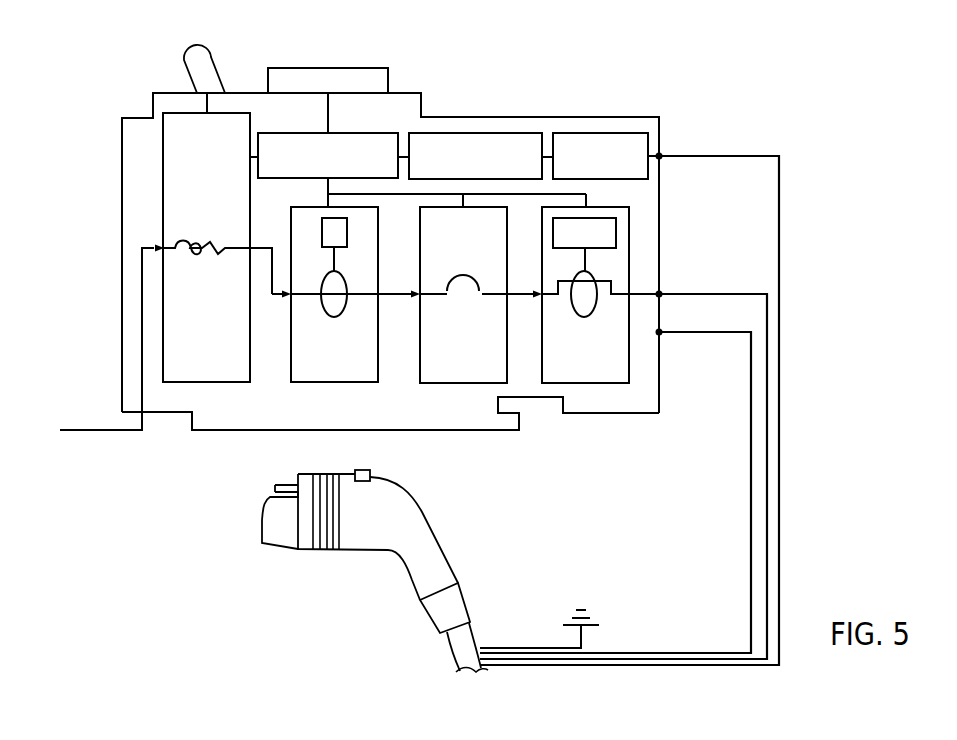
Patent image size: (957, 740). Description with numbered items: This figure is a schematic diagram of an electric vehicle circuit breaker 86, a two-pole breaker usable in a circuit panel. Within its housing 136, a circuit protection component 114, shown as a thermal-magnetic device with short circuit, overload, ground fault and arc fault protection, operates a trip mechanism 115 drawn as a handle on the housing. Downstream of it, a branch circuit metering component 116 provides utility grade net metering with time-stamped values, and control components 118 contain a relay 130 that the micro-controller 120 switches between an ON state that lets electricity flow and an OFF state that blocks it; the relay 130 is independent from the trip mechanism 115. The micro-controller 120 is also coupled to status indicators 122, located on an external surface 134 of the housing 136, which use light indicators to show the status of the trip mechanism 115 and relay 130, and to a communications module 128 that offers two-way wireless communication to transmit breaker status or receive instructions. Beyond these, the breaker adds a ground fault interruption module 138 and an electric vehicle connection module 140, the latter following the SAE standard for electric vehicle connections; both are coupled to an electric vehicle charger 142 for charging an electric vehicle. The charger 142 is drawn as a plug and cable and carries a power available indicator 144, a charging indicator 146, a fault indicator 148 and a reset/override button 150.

The electric vehicle circuit breaker 86 is at (665, 79).
The circuit protection component 114 is at (198, 382).
The trip mechanism 115 is at (184, 58).
The branch circuit metering component 116 is at (333, 382).
The control components 118 is at (463, 383).
The micro-controller 120 is at (351, 132).
The status indicators 122 is at (329, 67).
The communications module 128 is at (477, 132).
The relay 130 is at (463, 266).
The external surface 134 is at (404, 92).
The housing 136 is at (419, 430).
The ground fault interruption module 138 is at (592, 383).
The electric vehicle connection module 140 is at (601, 132).
The electric vehicle charger 142 is at (333, 606).
The power available indicator 144 is at (316, 551).
The charging indicator 146 is at (325, 552).
The fault indicator 148 is at (341, 552).
The reset/override button 150 is at (362, 471).